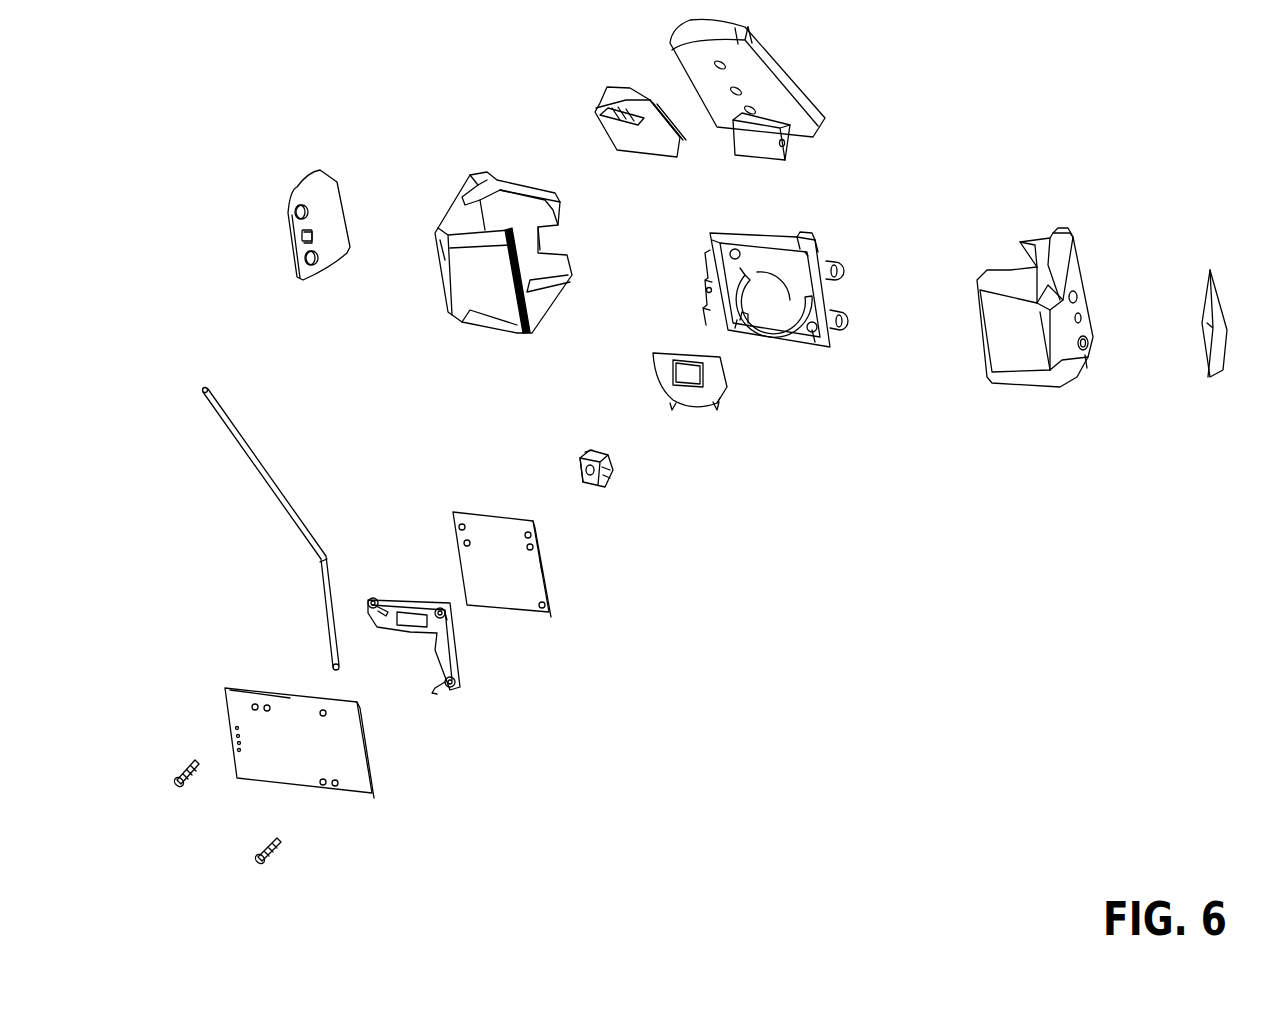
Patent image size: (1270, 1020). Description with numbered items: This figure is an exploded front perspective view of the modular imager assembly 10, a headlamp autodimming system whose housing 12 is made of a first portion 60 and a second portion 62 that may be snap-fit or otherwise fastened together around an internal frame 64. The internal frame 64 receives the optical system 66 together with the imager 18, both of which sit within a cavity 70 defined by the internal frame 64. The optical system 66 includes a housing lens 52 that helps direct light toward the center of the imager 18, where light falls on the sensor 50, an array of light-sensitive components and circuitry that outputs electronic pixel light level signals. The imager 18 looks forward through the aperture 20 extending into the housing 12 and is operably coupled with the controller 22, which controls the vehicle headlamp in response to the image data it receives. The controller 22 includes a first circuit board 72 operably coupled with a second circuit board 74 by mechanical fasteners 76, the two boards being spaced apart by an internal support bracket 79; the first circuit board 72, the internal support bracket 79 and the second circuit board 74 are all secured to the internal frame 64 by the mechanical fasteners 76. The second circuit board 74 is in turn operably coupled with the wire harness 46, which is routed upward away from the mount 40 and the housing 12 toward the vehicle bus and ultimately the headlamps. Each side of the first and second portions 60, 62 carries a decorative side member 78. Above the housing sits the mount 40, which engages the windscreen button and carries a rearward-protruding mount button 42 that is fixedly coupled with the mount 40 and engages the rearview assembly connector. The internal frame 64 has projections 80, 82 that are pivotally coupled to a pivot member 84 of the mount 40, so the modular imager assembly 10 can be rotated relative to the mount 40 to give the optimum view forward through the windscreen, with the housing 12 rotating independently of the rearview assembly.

The modular imager assembly 10 is at (945, 570).
The housing 12 is at (1063, 243).
The imager 18 is at (595, 490).
The aperture 20 is at (555, 238).
The controller 22 is at (547, 730).
The mount 40 is at (790, 78).
The mount button 42 is at (592, 118).
The wire harness 46 is at (285, 497).
The sensor 50 is at (578, 455).
The housing lens 52 is at (660, 366).
The first portion 60 is at (478, 305).
The second portion 62 is at (1025, 355).
The internal frame 64 is at (805, 237).
The optical system 66 is at (714, 405).
The cavity 70 is at (790, 290).
The first circuit board 72 is at (510, 595).
The second circuit board 74 is at (350, 748).
The mechanical fasteners 76 is at (265, 843).
The decorative side members 78 is at (325, 190).
The internal support bracket 79 is at (418, 600).
The projection 80 is at (752, 228).
The projection 82 is at (800, 245).
The pivot member 84 is at (785, 145).